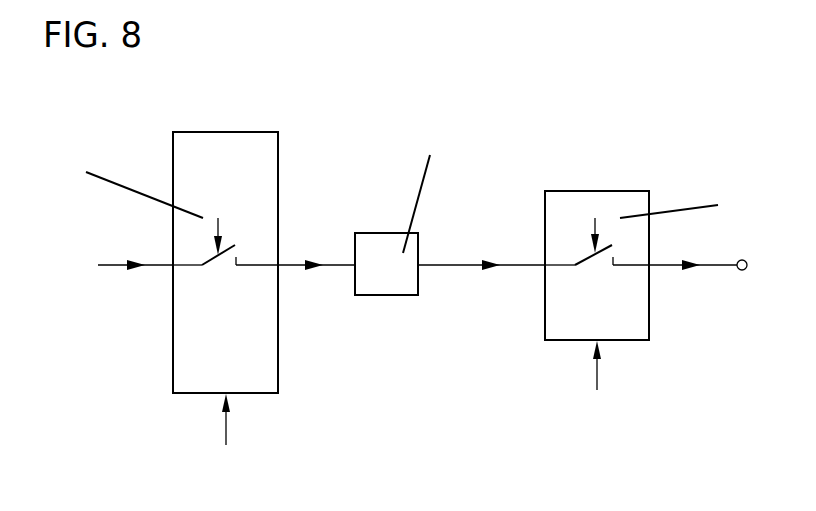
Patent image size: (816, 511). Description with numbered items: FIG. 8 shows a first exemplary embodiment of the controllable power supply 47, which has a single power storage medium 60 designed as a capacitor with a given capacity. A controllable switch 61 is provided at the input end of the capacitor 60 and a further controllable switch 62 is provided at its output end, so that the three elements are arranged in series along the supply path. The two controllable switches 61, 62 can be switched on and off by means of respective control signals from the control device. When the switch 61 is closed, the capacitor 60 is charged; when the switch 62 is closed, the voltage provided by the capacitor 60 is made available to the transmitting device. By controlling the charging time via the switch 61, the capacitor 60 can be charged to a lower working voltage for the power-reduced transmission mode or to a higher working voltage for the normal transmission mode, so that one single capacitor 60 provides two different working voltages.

The power supply switching arrangement 47 is at (678, 152).
The power storage medium 60 is at (386, 232).
The controllable switch 61 is at (222, 131).
The controllable switch 62 is at (592, 190).